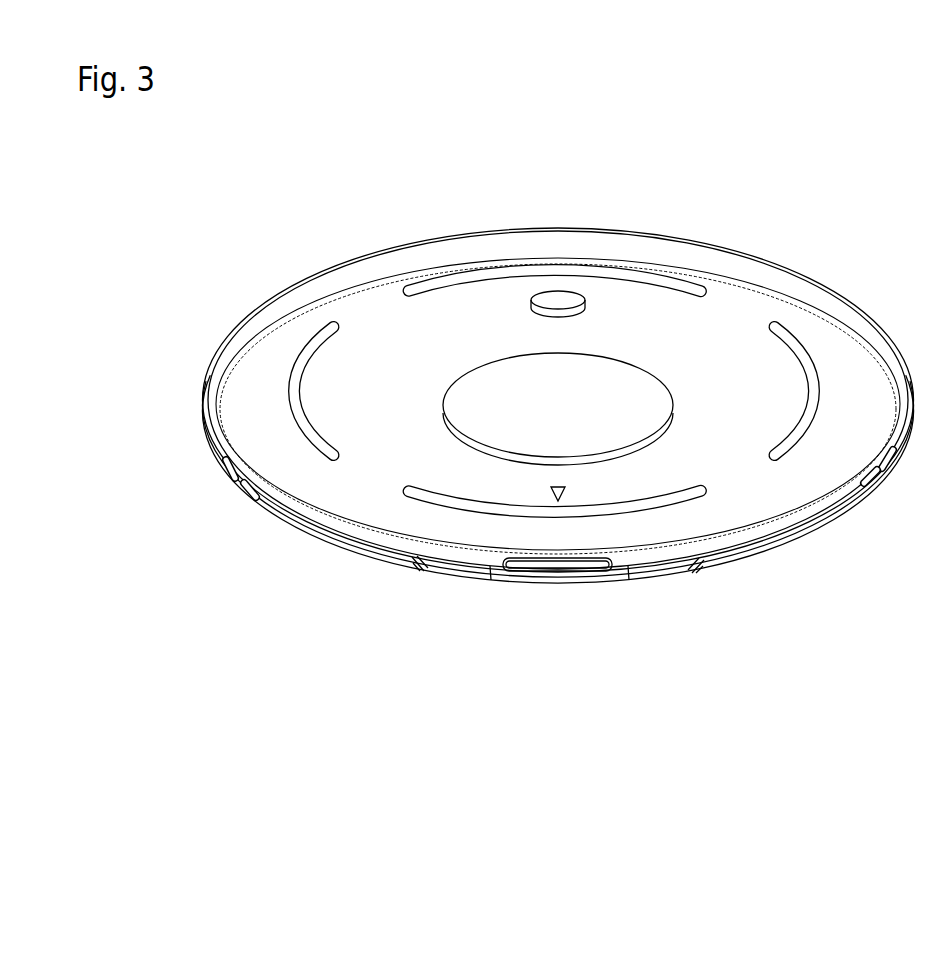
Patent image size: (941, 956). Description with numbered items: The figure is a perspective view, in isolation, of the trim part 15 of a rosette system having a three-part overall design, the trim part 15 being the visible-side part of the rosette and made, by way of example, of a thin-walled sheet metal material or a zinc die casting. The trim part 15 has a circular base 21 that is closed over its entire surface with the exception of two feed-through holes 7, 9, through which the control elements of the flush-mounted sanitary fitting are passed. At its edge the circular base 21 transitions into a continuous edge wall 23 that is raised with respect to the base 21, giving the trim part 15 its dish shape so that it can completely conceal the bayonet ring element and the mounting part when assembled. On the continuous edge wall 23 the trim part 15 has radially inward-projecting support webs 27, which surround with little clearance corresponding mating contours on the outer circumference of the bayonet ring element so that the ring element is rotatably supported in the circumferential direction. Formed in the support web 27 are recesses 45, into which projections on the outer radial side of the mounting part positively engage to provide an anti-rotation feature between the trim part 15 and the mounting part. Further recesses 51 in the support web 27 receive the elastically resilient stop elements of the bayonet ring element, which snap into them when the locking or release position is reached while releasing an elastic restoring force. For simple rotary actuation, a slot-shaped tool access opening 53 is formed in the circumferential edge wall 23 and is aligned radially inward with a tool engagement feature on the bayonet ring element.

The feed-through hole 7 is at (547, 356).
The feed-through hole 9 is at (558, 291).
The trim part 15 is at (490, 287).
The base 21 is at (357, 320).
The edge wall 23 is at (535, 232).
The support web 27 is at (294, 534).
The recess 45 is at (231, 486).
The recess 51 is at (413, 570).
The tool access opening 53 is at (557, 573).